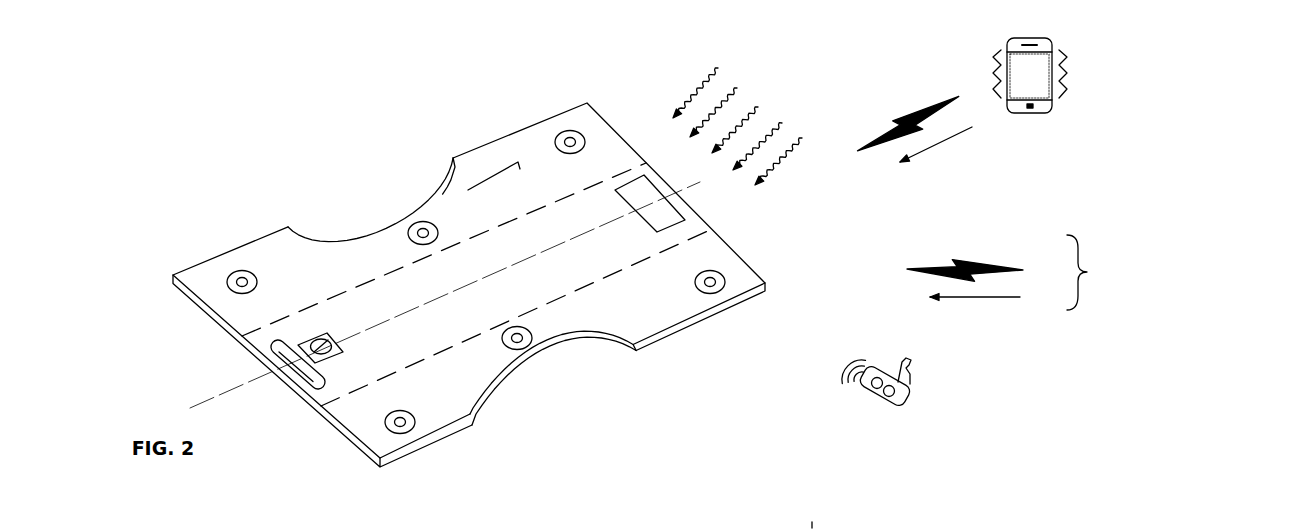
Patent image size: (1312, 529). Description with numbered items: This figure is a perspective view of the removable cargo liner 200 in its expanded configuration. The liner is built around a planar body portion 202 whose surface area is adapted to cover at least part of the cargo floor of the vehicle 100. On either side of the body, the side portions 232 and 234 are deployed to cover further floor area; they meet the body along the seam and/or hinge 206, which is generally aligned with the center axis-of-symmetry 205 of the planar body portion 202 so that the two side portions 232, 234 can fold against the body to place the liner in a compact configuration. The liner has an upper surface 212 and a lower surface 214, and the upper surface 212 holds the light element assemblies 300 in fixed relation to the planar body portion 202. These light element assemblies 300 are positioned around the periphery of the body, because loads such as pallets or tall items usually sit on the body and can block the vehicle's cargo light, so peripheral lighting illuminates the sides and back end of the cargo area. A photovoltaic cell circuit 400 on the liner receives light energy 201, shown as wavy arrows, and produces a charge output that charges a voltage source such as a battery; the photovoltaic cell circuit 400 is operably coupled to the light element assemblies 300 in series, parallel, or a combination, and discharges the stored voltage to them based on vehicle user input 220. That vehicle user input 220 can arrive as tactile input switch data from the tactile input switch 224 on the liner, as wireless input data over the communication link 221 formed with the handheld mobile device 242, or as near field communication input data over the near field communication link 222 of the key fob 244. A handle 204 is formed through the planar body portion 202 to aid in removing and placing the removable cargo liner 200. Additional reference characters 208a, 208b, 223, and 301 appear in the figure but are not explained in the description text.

The vehicle 100 is at (1158, 272).
The removable cargo liner 200 is at (463, 298).
The light energy 201 is at (755, 110).
The planar body portion 202 is at (503, 312).
The handle 204 is at (268, 373).
The center axis-of-symmetry 205 is at (368, 327).
The seam and/or hinge 206 is at (493, 227).
The notch 208a is at (447, 186).
The notch 208b is at (597, 341).
The upper surface 212 is at (193, 273).
The lower surface 214 is at (196, 306).
The vehicle user input 220 is at (943, 143).
The communication link 221 is at (937, 105).
The near field communication link 222 is at (835, 370).
The vehicle signal 223 is at (992, 262).
The tactile input switch 224 is at (343, 352).
The side portion 232 is at (652, 312).
The side portion 234 is at (335, 277).
The handheld mobile device 242 is at (1059, 62).
The key fob 244 is at (915, 395).
The light element assembly 300 is at (427, 465).
The light element 301 is at (835, 521).
The photovoltaic cell circuit 400 is at (687, 222).